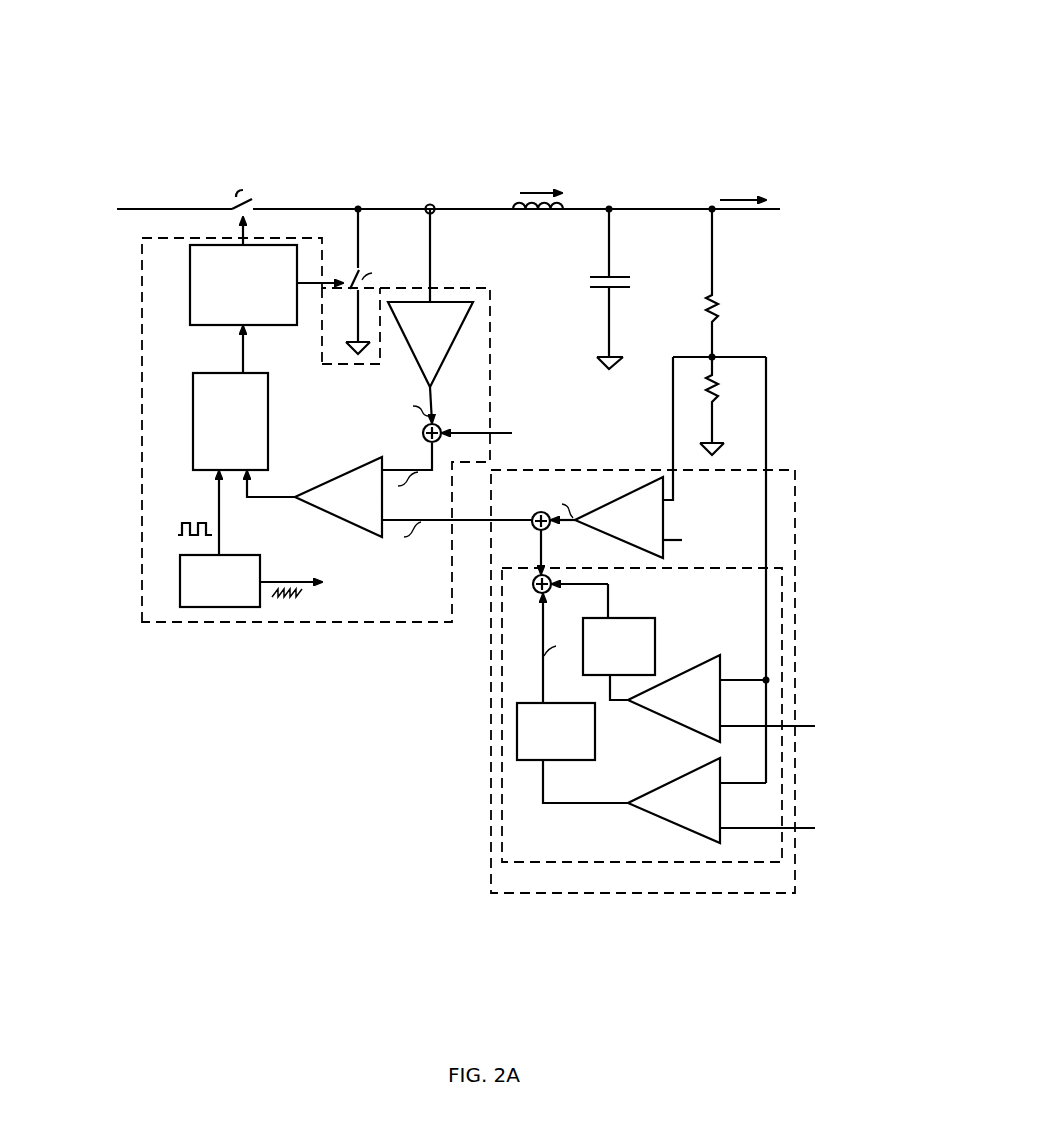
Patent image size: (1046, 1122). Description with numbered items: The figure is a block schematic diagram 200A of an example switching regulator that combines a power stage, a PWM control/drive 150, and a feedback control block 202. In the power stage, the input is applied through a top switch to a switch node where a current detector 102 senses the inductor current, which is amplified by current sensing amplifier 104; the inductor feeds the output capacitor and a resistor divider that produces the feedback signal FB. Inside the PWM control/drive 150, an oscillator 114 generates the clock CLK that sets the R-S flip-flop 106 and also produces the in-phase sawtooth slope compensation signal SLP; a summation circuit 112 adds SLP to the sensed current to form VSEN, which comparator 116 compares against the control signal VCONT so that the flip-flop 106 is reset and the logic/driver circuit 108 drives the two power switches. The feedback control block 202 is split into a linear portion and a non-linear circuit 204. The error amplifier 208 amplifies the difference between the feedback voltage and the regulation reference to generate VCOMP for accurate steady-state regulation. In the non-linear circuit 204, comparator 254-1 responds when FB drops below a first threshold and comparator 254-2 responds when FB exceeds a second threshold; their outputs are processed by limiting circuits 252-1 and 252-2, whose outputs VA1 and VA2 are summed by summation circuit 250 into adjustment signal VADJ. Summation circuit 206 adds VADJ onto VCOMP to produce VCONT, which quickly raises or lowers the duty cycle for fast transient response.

The block schematic diagram 200A is at (797, 47).
The current detector 102 is at (428, 205).
The current sensing amplifier 104 is at (447, 338).
The R-S flip-flop 106 is at (212, 433).
The logic/driver circuit 108 is at (228, 321).
The summation circuit 112 is at (423, 434).
The oscillator 114 is at (204, 604).
The comparator 116 is at (332, 507).
The PWM control/drive 150 is at (360, 605).
The feedback control block 202 is at (510, 882).
The non-linear circuit 204 is at (520, 791).
The summation circuit 206 is at (532, 513).
The error amplifier 208 is at (633, 497).
The summation circuit 250 is at (534, 591).
The limiting circuit 252-1 is at (596, 671).
The limiting circuit 252-2 is at (533, 756).
The comparator 254-1 is at (657, 706).
The comparator 254-2 is at (657, 786).